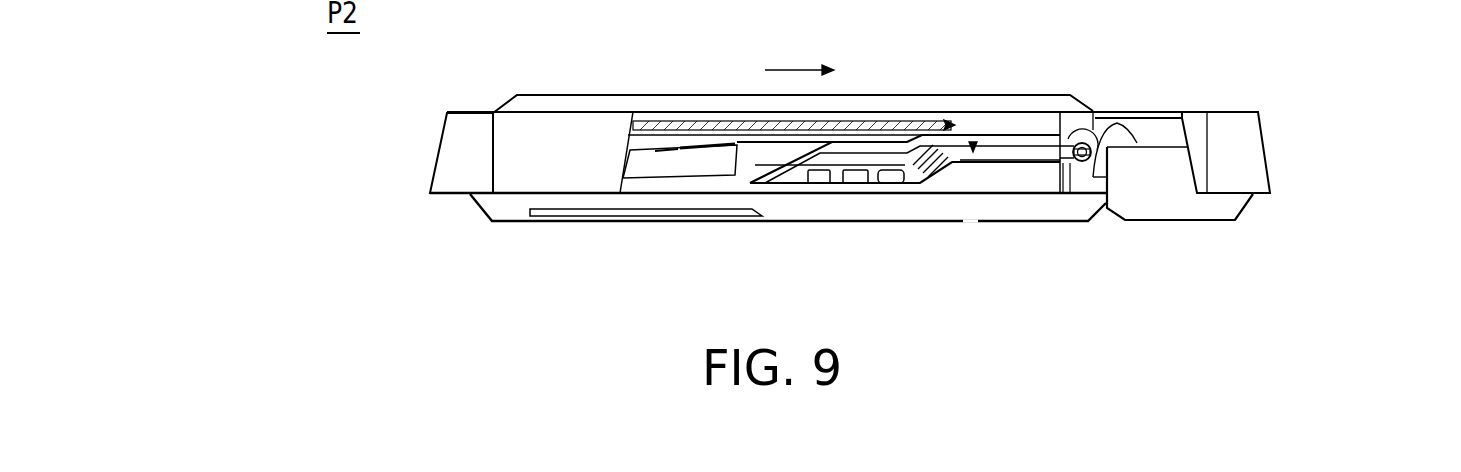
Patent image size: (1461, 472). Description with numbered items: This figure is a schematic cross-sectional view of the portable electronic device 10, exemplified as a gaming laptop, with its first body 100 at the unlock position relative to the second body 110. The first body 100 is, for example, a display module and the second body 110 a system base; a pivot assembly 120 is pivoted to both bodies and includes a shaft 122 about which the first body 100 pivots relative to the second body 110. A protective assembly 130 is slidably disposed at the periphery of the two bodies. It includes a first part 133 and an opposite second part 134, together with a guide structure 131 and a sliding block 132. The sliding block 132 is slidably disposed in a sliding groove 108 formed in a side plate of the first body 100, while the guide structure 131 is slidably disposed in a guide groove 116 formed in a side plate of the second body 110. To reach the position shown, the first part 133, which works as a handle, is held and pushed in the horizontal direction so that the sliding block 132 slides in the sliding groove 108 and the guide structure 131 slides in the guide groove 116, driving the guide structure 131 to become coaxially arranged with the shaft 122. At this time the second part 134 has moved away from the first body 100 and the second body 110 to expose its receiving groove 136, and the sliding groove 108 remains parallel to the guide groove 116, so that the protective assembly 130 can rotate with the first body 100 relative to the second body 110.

The portable electronic device 10 is at (854, 177).
The first body 100 is at (593, 107).
The sliding groove 108 is at (946, 125).
The second body 110 is at (670, 186).
The guide groove 116 is at (973, 143).
The pivot assembly 120 is at (1112, 106).
The shaft 122 is at (1090, 172).
The protective assembly 130 is at (854, 152).
The guide structure 131 is at (1086, 178).
The sliding block 132 is at (715, 119).
The first part 133 is at (455, 160).
The second part 134 is at (1247, 152).
The receiving groove 136 is at (1172, 207).